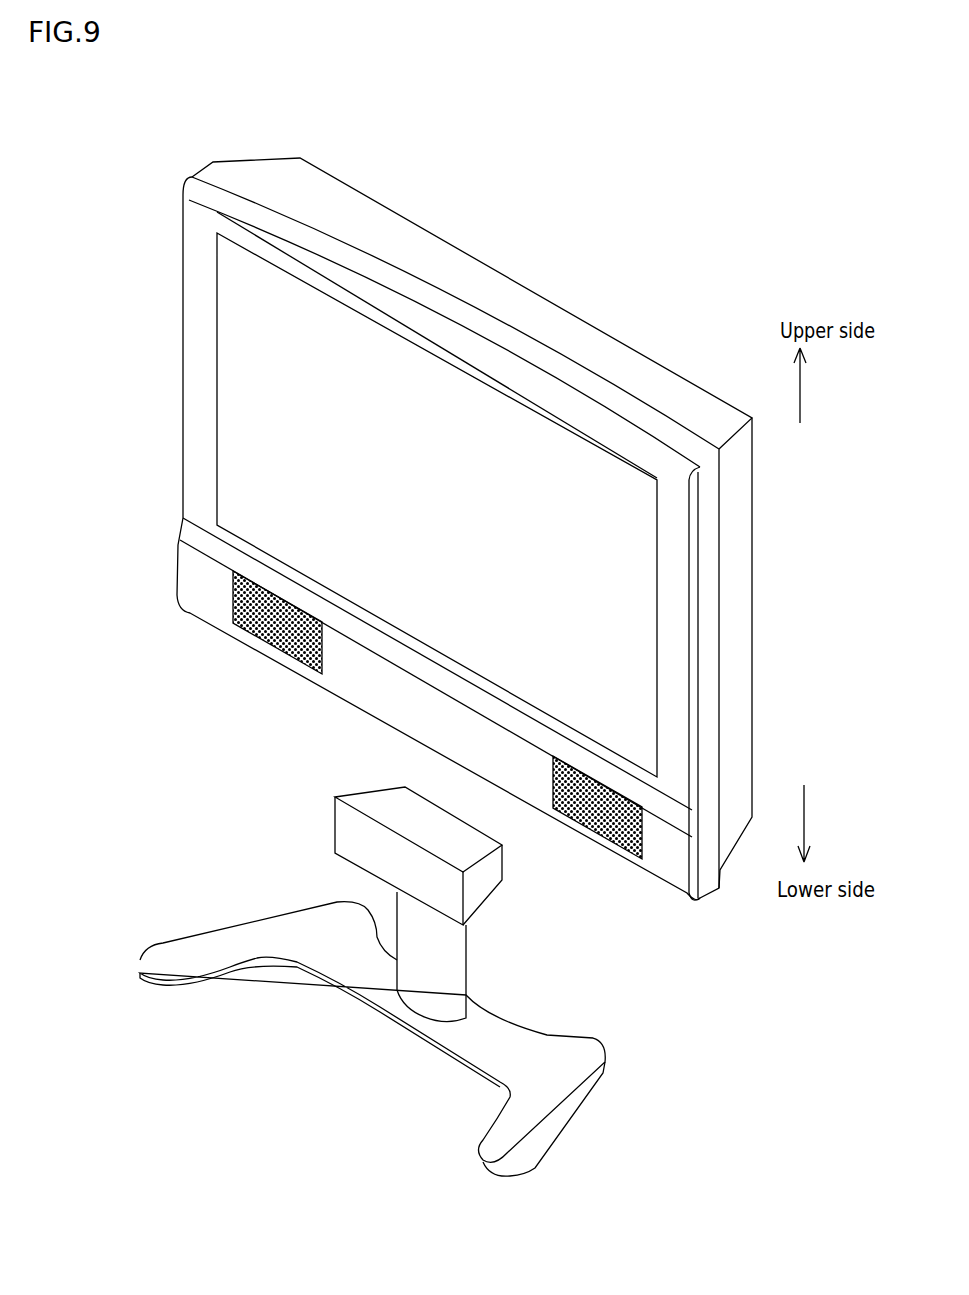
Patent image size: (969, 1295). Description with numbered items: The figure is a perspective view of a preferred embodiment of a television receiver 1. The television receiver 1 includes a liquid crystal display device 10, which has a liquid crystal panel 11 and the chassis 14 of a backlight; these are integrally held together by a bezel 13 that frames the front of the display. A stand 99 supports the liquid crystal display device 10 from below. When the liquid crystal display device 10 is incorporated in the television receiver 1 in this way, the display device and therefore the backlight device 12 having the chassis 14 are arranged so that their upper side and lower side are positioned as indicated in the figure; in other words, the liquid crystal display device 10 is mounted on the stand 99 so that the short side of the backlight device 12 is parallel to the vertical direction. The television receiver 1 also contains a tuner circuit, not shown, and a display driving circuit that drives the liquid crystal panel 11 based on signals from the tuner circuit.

The television receiver 1 is at (663, 242).
The liquid crystal display device 10 is at (542, 248).
The liquid crystal panel 11 is at (267, 442).
The backlight device 12 is at (777, 571).
The bezel 13 is at (215, 177).
The chassis 14 is at (712, 418).
The stand 99 is at (507, 1048).